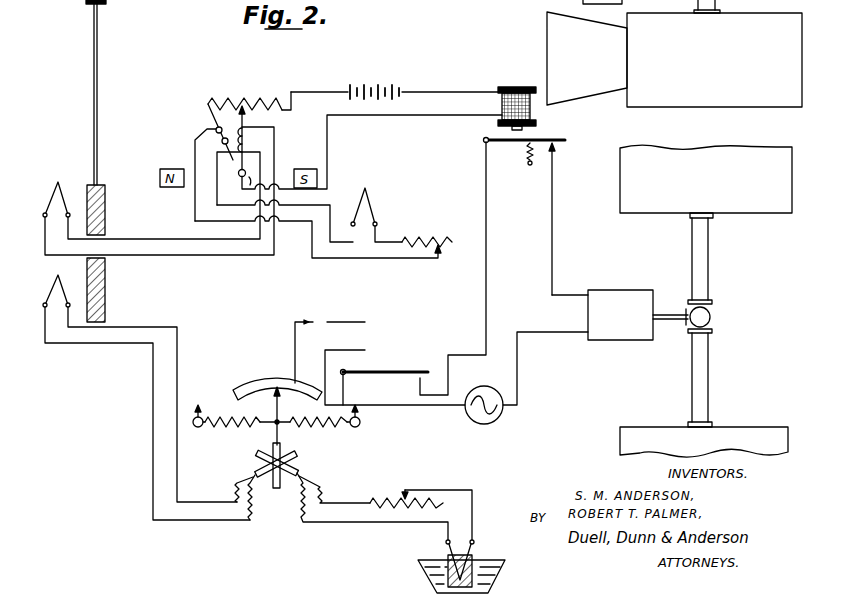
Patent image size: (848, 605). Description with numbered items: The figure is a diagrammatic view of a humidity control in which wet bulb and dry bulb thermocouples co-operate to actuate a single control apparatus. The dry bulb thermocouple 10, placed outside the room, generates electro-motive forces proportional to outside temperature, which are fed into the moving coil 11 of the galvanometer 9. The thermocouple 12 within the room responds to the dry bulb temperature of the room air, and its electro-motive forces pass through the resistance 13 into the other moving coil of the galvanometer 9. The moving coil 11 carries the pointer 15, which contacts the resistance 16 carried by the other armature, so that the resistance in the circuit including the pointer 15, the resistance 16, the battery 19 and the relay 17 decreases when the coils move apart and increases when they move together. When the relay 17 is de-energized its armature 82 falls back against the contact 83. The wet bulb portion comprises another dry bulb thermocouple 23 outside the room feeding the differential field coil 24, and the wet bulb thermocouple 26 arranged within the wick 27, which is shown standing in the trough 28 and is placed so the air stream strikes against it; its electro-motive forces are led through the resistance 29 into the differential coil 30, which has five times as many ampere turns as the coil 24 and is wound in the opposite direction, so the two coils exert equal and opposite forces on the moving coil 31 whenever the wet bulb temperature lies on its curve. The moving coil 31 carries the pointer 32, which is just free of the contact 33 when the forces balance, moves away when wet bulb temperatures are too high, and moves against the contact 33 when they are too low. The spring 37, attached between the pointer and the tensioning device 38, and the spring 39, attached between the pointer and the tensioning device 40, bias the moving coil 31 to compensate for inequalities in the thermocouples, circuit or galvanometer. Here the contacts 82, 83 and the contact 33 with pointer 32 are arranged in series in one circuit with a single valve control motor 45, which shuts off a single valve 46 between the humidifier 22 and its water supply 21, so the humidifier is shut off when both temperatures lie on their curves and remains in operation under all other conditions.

The galvanometer 9 is at (251, 183).
The dry bulb thermocouple 10 is at (61, 201).
The moving coil 11 is at (244, 143).
The thermocouple 12 is at (370, 217).
The resistance 13 is at (439, 242).
The pointer 15 is at (244, 162).
The resistance 16 is at (250, 104).
The relay 17 is at (500, 88).
The battery 19 is at (398, 87).
The water supply 21 is at (688, 152).
The humidifier 22 is at (730, 18).
The dry bulb thermocouple 23 is at (61, 288).
The differential field coil 24 is at (299, 454).
The wet bulb thermocouple 26 is at (474, 543).
The wick 27 is at (448, 557).
The trough 28 is at (432, 572).
The resistance 29 is at (406, 494).
The differential coil 30 is at (300, 474).
The moving coil 31 is at (281, 452).
The pointer 32 is at (280, 413).
The contact 33 is at (283, 379).
The spring 37 is at (240, 433).
The tensioning device 38 is at (194, 427).
The spring 39 is at (313, 431).
The tensioning device 40 is at (360, 426).
The valve control motor 45 is at (620, 341).
The valve 46 is at (711, 316).
The armature 82 is at (505, 143).
The contact 83 is at (556, 148).